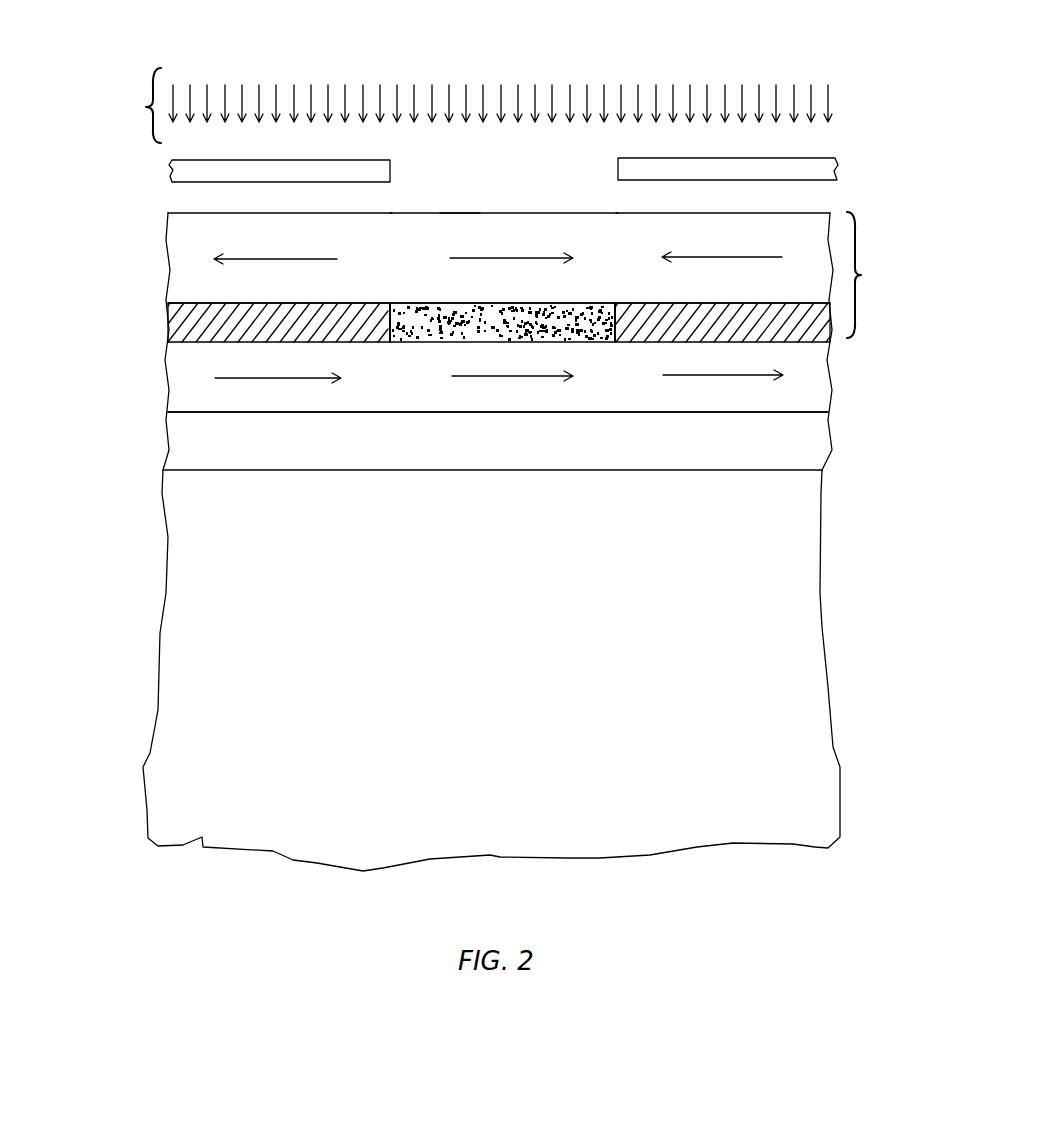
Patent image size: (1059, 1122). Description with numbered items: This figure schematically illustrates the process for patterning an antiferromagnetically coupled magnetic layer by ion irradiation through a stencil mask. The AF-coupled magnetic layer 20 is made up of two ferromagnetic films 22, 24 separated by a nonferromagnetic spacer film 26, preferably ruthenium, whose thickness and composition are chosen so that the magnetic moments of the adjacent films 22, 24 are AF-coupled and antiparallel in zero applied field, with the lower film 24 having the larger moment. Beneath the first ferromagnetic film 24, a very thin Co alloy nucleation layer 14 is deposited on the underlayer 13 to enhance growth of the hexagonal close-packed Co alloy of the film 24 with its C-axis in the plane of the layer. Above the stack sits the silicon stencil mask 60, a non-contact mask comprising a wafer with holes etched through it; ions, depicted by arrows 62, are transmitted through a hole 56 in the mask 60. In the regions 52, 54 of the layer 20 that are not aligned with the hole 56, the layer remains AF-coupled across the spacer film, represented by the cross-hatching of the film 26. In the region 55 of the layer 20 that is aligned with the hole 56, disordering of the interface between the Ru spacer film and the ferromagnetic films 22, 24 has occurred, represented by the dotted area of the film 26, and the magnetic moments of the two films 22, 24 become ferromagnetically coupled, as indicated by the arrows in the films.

The underlayer 13 is at (822, 560).
The nucleation layer 14 is at (826, 437).
The AF-coupled magnetic layer 20 is at (534, 341).
The ferromagnetic film 22 is at (192, 267).
The ferromagnetic film 24 is at (190, 388).
The nonferromagnetic spacer film 26 is at (168, 322).
The region 52 is at (205, 212).
The region 54 is at (823, 213).
The region 55 is at (458, 213).
The hole 56 is at (524, 170).
The stencil mask 60 is at (820, 165).
The ions 62 is at (146, 108).